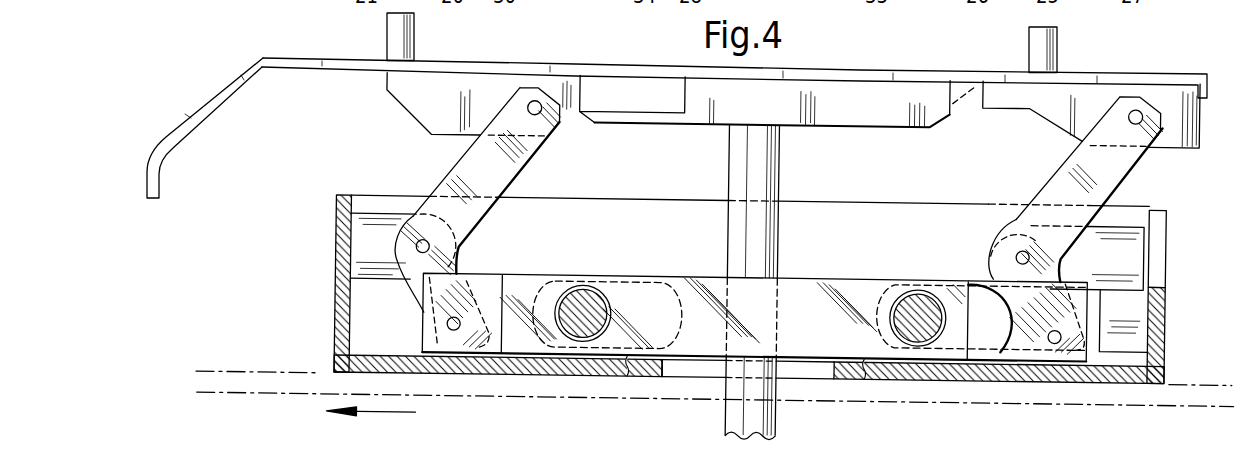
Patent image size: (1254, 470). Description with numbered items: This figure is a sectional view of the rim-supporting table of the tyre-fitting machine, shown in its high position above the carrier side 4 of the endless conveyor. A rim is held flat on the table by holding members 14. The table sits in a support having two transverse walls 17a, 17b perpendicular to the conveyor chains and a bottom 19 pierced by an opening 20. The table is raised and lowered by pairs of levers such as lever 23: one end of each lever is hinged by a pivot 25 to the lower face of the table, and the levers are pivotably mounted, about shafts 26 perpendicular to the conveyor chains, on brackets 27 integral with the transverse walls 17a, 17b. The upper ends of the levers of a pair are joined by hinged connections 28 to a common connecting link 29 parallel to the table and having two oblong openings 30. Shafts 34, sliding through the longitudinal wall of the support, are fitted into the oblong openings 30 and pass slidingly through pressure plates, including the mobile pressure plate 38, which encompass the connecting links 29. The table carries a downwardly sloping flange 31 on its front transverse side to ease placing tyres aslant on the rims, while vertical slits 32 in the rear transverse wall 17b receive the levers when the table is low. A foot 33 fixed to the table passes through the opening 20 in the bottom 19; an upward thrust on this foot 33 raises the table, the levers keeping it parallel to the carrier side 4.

The carrier side 4 is at (250, 381).
The holding members 14 is at (414, 40).
The transverse wall 17a is at (334, 309).
The rear transverse wall 17b is at (1166, 319).
The bottom 19 is at (535, 374).
The opening 20 is at (671, 373).
The lever 23 is at (526, 156).
The pivot 25 is at (536, 98).
The shafts 26 is at (420, 238).
The brackets 27 is at (373, 238).
The hinged connections 28 is at (456, 329).
The connecting link 29 is at (484, 290).
The oblong openings 30 is at (646, 289).
The downwardly sloping flange 31 is at (208, 103).
The vertical slits 32 is at (1158, 229).
The foot 33 is at (766, 159).
The shafts 34 is at (584, 284).
The pressure plate 38 is at (800, 300).